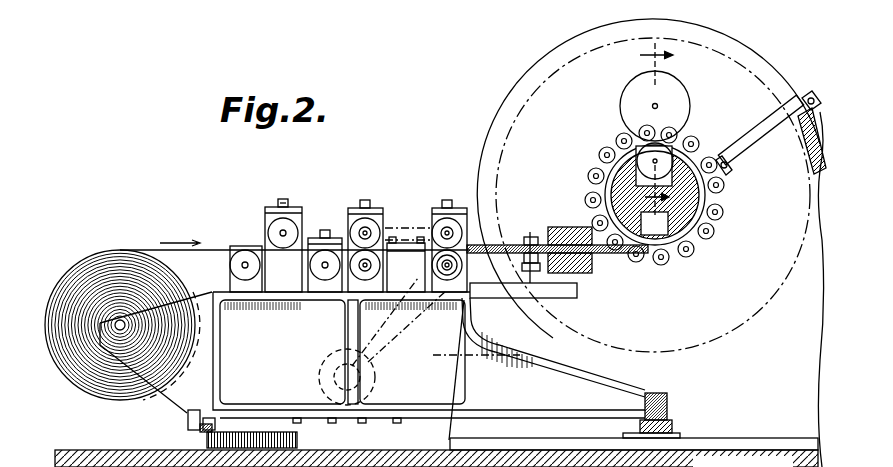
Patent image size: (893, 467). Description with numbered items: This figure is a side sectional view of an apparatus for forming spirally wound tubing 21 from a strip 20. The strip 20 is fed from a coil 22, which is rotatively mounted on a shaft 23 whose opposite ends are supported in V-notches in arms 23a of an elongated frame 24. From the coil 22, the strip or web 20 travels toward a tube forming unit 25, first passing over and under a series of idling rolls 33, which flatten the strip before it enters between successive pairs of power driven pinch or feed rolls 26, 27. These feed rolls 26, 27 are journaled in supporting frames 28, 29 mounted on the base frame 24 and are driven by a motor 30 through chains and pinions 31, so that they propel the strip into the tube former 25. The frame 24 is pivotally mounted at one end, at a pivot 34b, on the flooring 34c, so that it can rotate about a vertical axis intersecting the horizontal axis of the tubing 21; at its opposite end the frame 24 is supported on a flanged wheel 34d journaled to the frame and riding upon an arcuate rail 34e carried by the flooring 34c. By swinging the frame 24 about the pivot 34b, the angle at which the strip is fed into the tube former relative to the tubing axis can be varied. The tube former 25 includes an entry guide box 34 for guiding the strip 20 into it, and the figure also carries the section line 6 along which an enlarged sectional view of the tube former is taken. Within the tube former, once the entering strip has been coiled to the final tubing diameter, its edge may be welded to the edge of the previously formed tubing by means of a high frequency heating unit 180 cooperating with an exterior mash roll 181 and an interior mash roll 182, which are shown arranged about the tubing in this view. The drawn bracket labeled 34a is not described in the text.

The strip 20 is at (205, 248).
The spirally wound tubing 21 is at (366, 285).
The coil 22 is at (92, 252).
The shaft 23 is at (128, 325).
The arms 23a is at (160, 372).
The frame 24 is at (575, 377).
The tube forming unit 25 is at (572, 126).
The feed rolls 26 is at (375, 228).
The feed rolls 27 is at (463, 210).
The supporting frame 28 is at (349, 208).
The supporting frame 29 is at (428, 227).
The motor 30 is at (333, 374).
The chains and pinions 31 is at (398, 330).
The idling rolls 33 is at (300, 190).
The entry guide box 34 is at (592, 270).
The clamp bracket 34a is at (550, 299).
The pivot 34b is at (662, 420).
The flooring 34c is at (740, 438).
The flanged wheel 34d is at (208, 411).
The arcuate rail 34e is at (300, 440).
The section line 6 is at (648, 127).
The high frequency heating unit 180 is at (756, 126).
The exterior mash roll 181 is at (622, 90).
The interior mash roll 182 is at (641, 157).